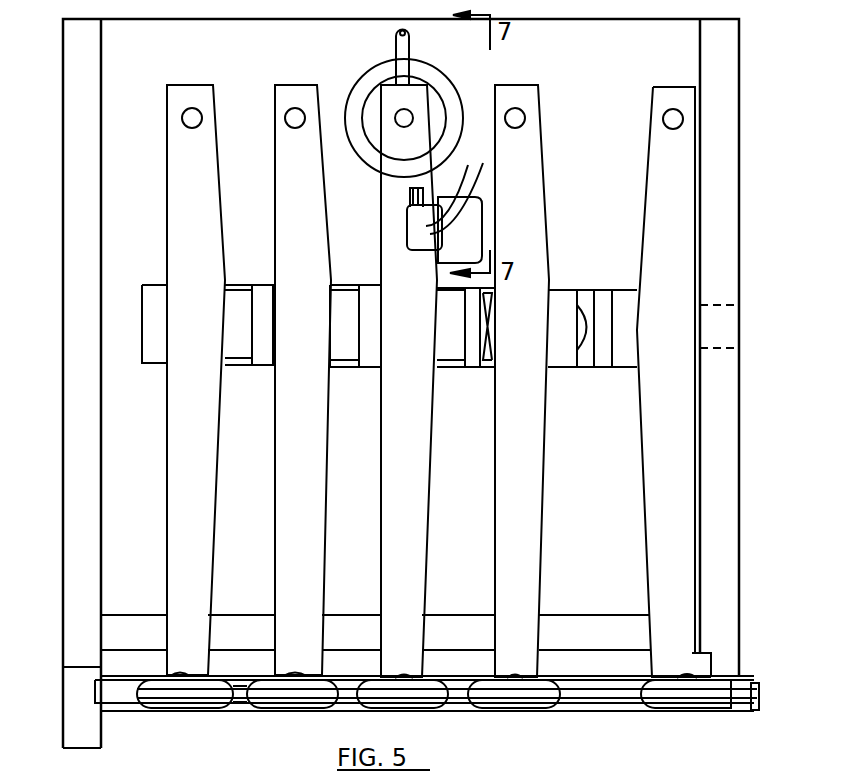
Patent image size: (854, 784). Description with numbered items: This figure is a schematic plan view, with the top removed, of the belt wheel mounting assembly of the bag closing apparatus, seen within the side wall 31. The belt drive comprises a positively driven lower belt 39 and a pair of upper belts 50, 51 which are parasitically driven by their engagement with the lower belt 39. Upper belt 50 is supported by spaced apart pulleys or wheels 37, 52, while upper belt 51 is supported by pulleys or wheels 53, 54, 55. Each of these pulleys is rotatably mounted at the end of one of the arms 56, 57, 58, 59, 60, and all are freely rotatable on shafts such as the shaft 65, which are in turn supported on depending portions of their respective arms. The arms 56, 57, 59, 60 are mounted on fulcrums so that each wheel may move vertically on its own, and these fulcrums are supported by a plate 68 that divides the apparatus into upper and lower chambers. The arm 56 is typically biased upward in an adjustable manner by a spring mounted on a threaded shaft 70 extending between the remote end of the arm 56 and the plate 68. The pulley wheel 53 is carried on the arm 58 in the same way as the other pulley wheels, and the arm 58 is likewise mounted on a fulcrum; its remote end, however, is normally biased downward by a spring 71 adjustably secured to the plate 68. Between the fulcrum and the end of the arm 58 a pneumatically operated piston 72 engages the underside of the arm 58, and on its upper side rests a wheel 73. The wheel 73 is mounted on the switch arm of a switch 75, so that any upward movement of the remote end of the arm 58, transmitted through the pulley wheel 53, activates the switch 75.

The side wall 31 is at (737, 472).
The pulley or wheel 37 is at (690, 710).
The lower belt 39 is at (760, 693).
The upper belt 50 is at (607, 698).
The upper belt 51 is at (243, 692).
The pulley or wheel 52 is at (525, 702).
The pulley wheel 53 is at (420, 708).
The pulley or wheel 54 is at (305, 706).
The pulley or wheel 55 is at (182, 700).
The arm 56 is at (655, 467).
The arm 57 is at (503, 470).
The arm 58 is at (393, 467).
The arm 59 is at (288, 487).
The arm 60 is at (173, 485).
The shaft 65 is at (188, 673).
The plate 68 is at (607, 189).
The threaded shaft 70 is at (285, 118).
The spring 71 is at (394, 31).
The pneumatically operated piston 72 is at (436, 100).
The wheel 73 is at (410, 192).
The switch 75 is at (413, 228).